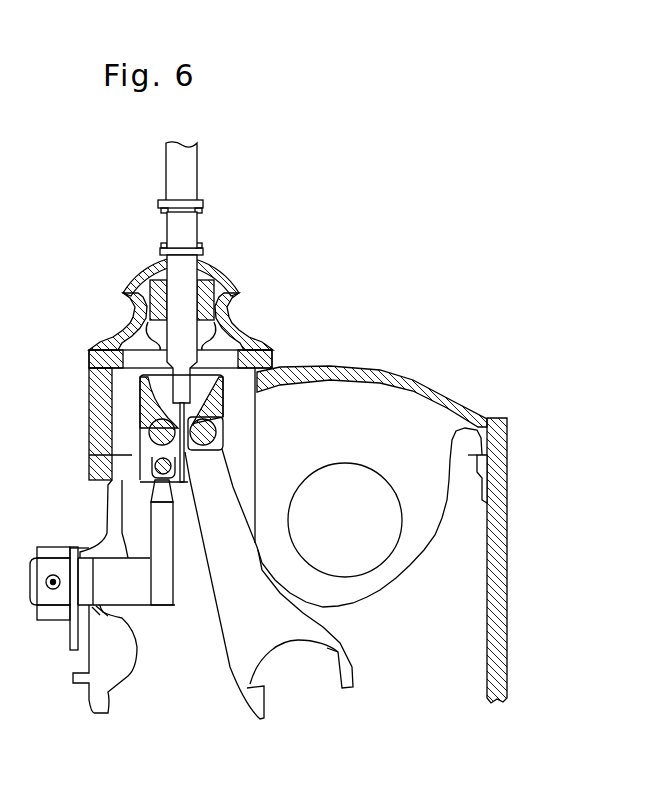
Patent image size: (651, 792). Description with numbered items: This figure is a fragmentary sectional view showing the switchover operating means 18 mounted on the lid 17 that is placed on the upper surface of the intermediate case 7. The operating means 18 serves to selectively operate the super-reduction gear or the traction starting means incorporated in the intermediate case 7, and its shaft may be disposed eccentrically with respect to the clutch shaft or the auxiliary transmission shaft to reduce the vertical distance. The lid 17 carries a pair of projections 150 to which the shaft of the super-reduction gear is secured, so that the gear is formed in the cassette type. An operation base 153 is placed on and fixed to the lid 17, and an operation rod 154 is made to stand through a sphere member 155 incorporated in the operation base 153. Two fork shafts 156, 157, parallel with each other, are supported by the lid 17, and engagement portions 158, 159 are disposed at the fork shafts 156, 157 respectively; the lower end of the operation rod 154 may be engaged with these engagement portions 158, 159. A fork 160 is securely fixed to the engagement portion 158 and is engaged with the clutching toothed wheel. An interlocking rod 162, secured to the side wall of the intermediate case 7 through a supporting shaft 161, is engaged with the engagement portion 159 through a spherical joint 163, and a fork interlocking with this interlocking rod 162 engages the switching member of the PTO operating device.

The intermediate case 7 is at (500, 583).
The lid 17 is at (410, 383).
The switchover operating means 18 is at (215, 243).
The projections of the lid 150 is at (450, 525).
The operation base 153 is at (237, 337).
The operation rod 154 is at (168, 227).
The sphere member 155 is at (142, 273).
The fork shaft 156 is at (210, 430).
The fork shaft 157 is at (153, 432).
The engagement portion 158 is at (220, 403).
The engagement portion 159 is at (147, 392).
The fork 160 is at (233, 658).
The supporting shaft 161 is at (108, 597).
The interlocking rod 162 is at (163, 600).
The spherical joint 163 is at (157, 467).